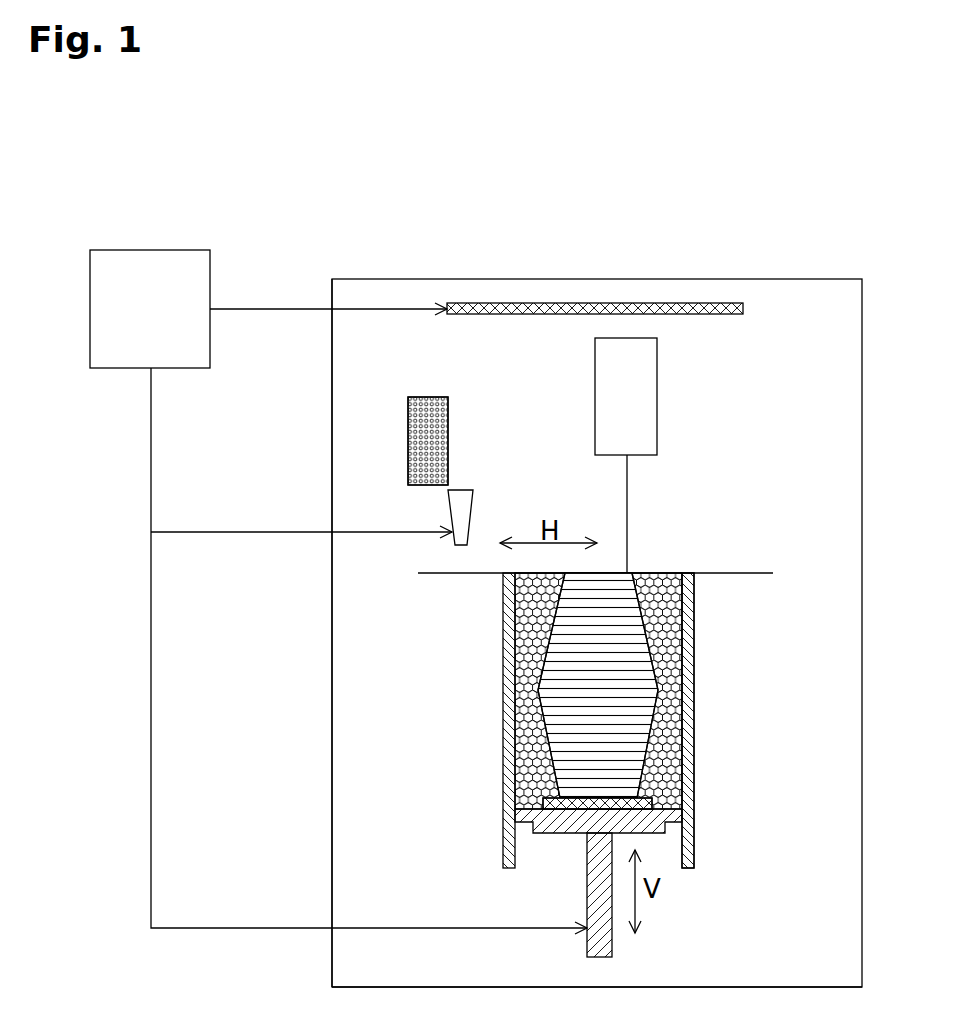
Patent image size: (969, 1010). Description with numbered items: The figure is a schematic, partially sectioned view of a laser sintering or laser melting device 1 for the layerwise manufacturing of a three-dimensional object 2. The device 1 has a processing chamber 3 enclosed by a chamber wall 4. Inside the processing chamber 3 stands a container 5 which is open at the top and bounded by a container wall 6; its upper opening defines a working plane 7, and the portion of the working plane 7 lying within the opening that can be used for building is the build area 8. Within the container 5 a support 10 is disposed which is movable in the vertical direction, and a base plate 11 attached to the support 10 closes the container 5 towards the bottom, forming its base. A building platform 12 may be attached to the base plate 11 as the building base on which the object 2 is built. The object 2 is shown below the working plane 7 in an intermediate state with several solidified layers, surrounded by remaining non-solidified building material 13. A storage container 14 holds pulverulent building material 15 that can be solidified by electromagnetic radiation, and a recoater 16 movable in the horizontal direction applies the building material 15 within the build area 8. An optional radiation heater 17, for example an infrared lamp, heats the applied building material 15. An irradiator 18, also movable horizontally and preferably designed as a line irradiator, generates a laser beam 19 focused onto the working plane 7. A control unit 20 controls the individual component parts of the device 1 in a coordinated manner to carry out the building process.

The laser sintering or laser melting device 1 is at (797, 248).
The object 2 is at (617, 630).
The processing chamber 3 is at (413, 703).
The chamber wall 4 is at (332, 397).
The container 5 is at (694, 778).
The container wall 6 is at (688, 720).
The working plane 7 is at (728, 573).
The build area 8 is at (657, 573).
The support 10 is at (575, 834).
The base plate 11 is at (540, 817).
The building platform 12 is at (557, 803).
The non-solidified building material 13 is at (528, 618).
The storage container 14 is at (425, 397).
The pulverulent building material 15 is at (440, 440).
The recoater 16 is at (450, 517).
The radiation heater 17 is at (710, 314).
The irradiator 18 is at (627, 420).
The laser beam 19 is at (628, 502).
The control unit 20 is at (338, 592).